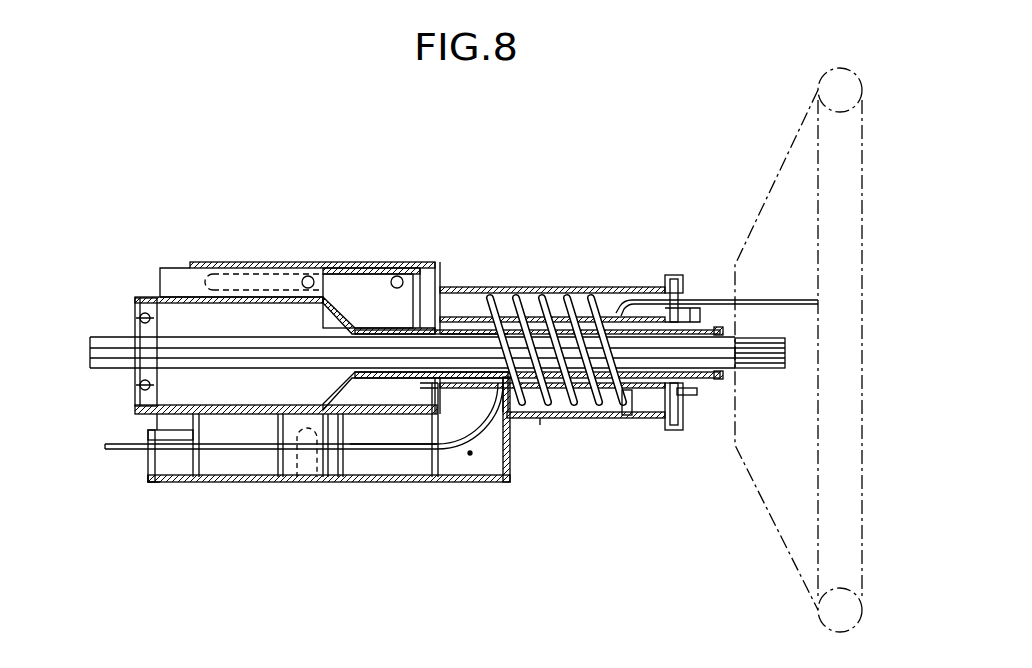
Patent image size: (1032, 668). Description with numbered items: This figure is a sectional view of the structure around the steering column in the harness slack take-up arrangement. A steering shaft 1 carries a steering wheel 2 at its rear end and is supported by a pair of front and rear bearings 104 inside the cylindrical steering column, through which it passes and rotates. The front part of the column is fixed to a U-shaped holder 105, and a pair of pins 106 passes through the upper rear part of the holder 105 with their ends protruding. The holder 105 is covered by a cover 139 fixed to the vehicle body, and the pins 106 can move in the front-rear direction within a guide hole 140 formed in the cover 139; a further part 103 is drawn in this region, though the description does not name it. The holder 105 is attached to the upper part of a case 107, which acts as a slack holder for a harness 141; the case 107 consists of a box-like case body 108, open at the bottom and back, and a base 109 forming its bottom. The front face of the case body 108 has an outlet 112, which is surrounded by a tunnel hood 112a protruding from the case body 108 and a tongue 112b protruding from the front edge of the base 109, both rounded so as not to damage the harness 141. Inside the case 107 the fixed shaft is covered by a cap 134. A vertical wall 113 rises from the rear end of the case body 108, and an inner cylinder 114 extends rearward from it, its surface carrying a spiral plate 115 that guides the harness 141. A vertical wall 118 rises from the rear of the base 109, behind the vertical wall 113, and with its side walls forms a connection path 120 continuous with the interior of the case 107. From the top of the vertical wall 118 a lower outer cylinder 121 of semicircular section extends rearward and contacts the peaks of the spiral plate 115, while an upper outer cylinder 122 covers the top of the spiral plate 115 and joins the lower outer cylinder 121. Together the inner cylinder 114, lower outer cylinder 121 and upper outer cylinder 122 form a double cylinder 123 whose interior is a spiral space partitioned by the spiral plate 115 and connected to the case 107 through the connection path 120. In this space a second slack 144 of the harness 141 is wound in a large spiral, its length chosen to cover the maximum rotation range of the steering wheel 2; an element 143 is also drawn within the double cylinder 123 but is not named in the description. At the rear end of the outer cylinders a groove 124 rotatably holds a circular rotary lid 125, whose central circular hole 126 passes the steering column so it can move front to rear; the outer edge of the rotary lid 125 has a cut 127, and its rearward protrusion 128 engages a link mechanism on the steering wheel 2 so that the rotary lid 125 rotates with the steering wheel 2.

The steering shaft 1 is at (112, 335).
The steering wheel 2 is at (775, 165).
The block 103 is at (385, 292).
The bearings 104 is at (152, 300).
The holder 105 is at (172, 265).
The pins 106 is at (304, 276).
The case 107 is at (340, 498).
The case body 108 is at (373, 450).
The base 109 is at (225, 484).
The outlet 112 is at (158, 462).
The tunnel hood 112a is at (168, 427).
The tongue 112b is at (165, 485).
The vertical wall 113 is at (452, 287).
The inner cylinder 114 is at (626, 415).
The spiral plate 115 is at (607, 287).
The vertical wall 118 is at (470, 453).
The connection path 120 is at (490, 484).
The lower outer cylinder 121 is at (532, 425).
The upper outer cylinder 122 is at (565, 287).
The double cylinder 123 is at (503, 262).
The groove 124 is at (668, 275).
The rotary lid 125 is at (688, 430).
The circular hole 126 is at (704, 308).
The cut 127 is at (690, 290).
The protrusion 128 is at (700, 394).
The cap 134 is at (268, 484).
The cover 139 is at (248, 262).
The guide hole 140 is at (338, 268).
The harness 141 is at (105, 446).
The coil spring 143 is at (583, 287).
The second slack 144 is at (527, 287).